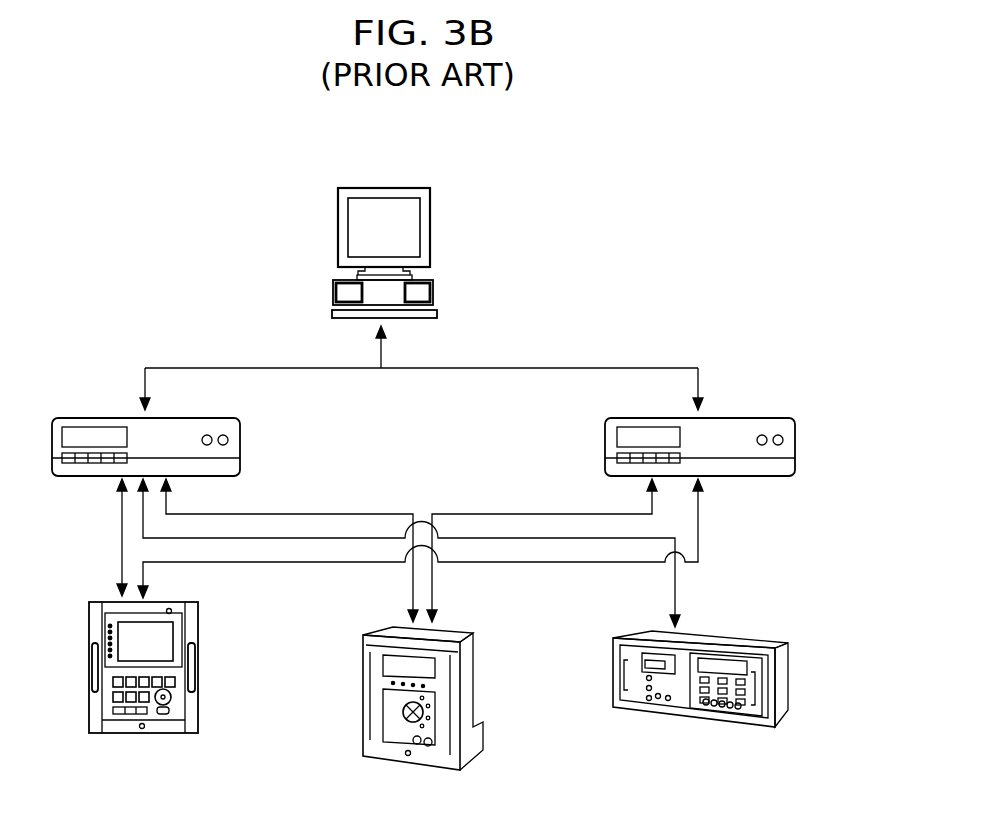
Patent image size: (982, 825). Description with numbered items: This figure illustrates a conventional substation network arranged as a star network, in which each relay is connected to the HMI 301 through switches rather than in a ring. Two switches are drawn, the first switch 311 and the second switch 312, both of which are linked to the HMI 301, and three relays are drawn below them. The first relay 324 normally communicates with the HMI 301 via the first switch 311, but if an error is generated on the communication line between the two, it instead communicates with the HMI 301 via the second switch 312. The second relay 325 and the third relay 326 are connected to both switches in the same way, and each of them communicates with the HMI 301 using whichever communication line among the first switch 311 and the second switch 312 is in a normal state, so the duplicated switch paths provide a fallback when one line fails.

The HMI 301 is at (382, 188).
The switch 1 311 is at (90, 418).
The switch 2 312 is at (742, 418).
The relay 1 324 is at (198, 628).
The relay 2 325 is at (473, 682).
The relay 3 326 is at (790, 680).